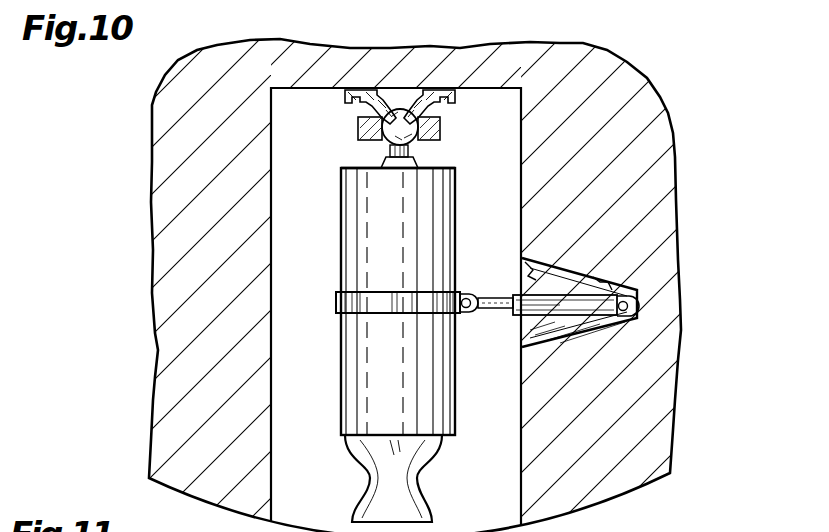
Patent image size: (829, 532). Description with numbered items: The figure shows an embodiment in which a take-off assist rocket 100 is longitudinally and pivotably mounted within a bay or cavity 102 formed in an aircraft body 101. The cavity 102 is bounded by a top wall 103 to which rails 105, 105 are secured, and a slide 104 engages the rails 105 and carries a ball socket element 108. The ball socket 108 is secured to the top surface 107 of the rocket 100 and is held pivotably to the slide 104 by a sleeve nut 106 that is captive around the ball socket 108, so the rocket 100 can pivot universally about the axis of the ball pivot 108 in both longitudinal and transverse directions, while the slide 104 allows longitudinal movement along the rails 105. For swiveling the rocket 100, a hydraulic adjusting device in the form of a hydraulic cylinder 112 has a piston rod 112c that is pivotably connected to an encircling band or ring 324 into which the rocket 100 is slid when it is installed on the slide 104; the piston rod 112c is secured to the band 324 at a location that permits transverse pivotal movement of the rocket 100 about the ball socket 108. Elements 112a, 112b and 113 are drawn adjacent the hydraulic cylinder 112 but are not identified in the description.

The rocket 100 is at (456, 402).
The aircraft body 101 is at (660, 124).
The bay or cavity 102 is at (505, 226).
The top wall 103 is at (490, 88).
The slide 104 is at (384, 104).
The rails 105 is at (362, 88).
The sleeve nut 106 is at (441, 128).
The top surface of the rocket 107 is at (358, 167).
The ball socket element 108 is at (413, 142).
The hydraulic cylinder 112 is at (640, 302).
The wedge hook 112a is at (545, 243).
The wedge hook 112b is at (612, 278).
The piston rod 112c is at (488, 315).
The pivot eye 113 is at (632, 313).
The encircling band or ring 324 is at (338, 302).